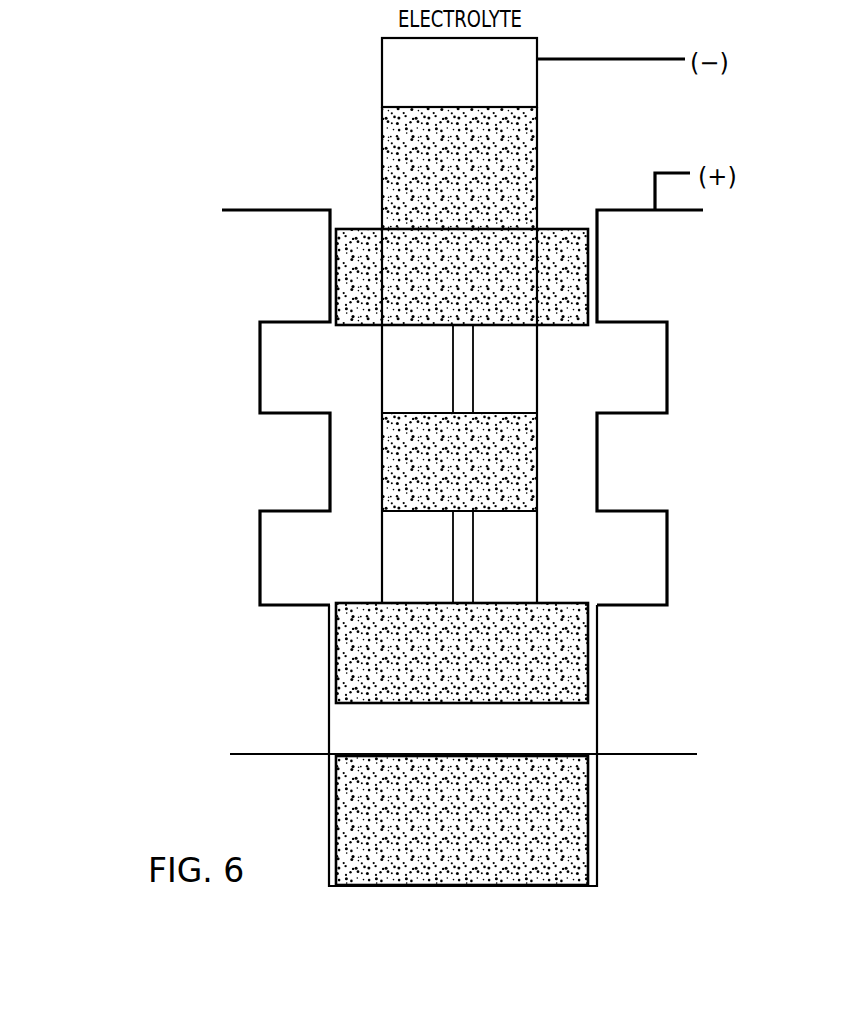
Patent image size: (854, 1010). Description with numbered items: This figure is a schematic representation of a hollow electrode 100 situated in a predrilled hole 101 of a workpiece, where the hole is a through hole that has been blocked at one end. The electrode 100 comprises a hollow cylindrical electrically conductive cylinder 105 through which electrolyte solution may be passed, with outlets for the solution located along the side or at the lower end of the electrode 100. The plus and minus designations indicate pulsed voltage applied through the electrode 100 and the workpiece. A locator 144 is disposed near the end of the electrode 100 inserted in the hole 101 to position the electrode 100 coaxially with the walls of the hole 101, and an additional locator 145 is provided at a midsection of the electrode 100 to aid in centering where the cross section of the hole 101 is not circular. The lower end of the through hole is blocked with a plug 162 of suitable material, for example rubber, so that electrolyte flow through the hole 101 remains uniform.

The electrode 100 is at (266, 44).
The hollow cylindrical electrically conductive cylinder 105 is at (382, 66).
The predrilled hole 101 is at (355, 213).
The additional locator 145 is at (553, 240).
The locator 144 is at (569, 651).
The plug 162 is at (597, 861).